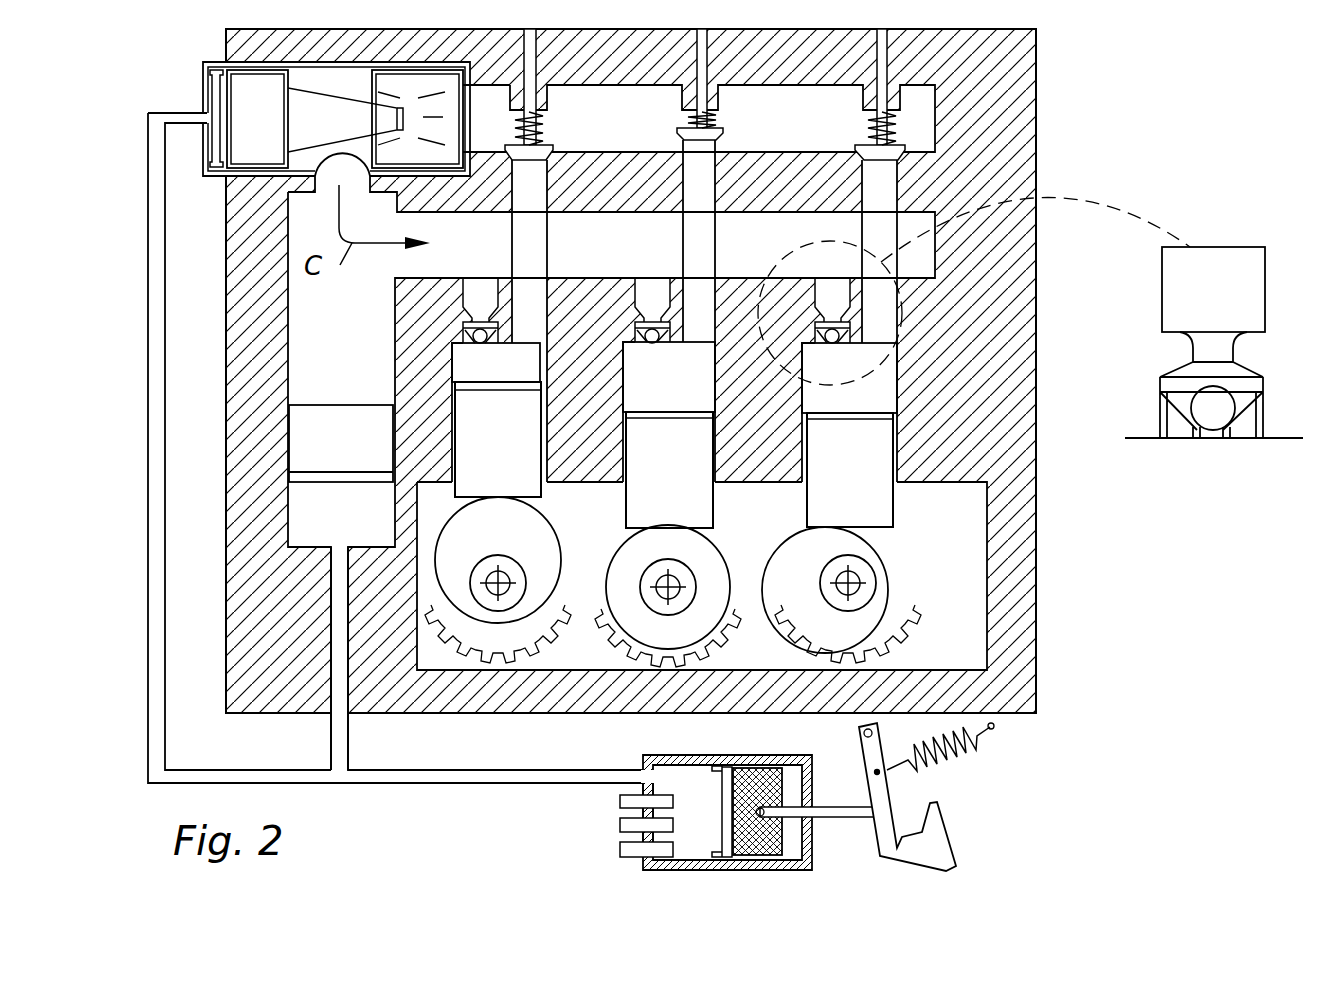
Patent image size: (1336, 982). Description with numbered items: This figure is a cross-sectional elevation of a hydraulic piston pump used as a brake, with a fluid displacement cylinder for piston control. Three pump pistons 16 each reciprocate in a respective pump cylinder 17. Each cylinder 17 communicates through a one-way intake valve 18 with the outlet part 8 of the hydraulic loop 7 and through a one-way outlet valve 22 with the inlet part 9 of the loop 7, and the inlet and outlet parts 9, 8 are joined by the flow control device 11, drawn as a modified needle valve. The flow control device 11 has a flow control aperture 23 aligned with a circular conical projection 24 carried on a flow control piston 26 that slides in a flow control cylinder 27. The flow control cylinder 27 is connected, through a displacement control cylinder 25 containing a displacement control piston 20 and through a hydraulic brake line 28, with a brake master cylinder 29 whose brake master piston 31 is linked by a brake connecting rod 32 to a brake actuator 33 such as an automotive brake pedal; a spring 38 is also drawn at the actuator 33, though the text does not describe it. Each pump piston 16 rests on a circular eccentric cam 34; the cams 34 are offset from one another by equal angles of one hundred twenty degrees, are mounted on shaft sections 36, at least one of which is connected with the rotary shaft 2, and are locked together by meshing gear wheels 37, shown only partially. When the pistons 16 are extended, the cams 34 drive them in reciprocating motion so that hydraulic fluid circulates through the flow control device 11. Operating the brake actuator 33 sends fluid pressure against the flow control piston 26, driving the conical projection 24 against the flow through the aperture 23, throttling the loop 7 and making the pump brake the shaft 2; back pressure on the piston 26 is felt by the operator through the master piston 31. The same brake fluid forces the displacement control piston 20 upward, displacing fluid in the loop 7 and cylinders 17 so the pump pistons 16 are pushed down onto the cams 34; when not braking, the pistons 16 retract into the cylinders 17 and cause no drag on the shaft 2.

The rotary shaft 2 is at (510, 590).
The hydraulic loop 7 is at (617, 114).
The outlet part of the hydraulic loop 8 is at (640, 256).
The inlet part of the hydraulic loop 9 is at (718, 147).
The flow control device 11 is at (333, 80).
The pump piston 16 is at (482, 466).
The pump cylinder 17 is at (471, 376).
The one-way intake valve 18 is at (645, 322).
The displacement control piston 20 is at (317, 456).
The one-way outlet valve 22 is at (542, 138).
The flow control aperture 23 is at (441, 119).
The circular conical projection 24 is at (298, 118).
The displacement control cylinder 25 is at (337, 531).
The flow control piston 26 is at (243, 110).
The flow control cylinder 27 is at (250, 172).
The hydraulic brake line 28 is at (147, 628).
The brake master cylinder 29 is at (637, 830).
The brake master piston 31 is at (782, 848).
The brake connecting rod 32 is at (875, 820).
The brake actuator 33 is at (950, 843).
The circular eccentric cam 34 is at (557, 548).
The shaft section 36 is at (483, 548).
The meshing gear wheel 37 is at (480, 690).
The return spring 38 is at (948, 758).